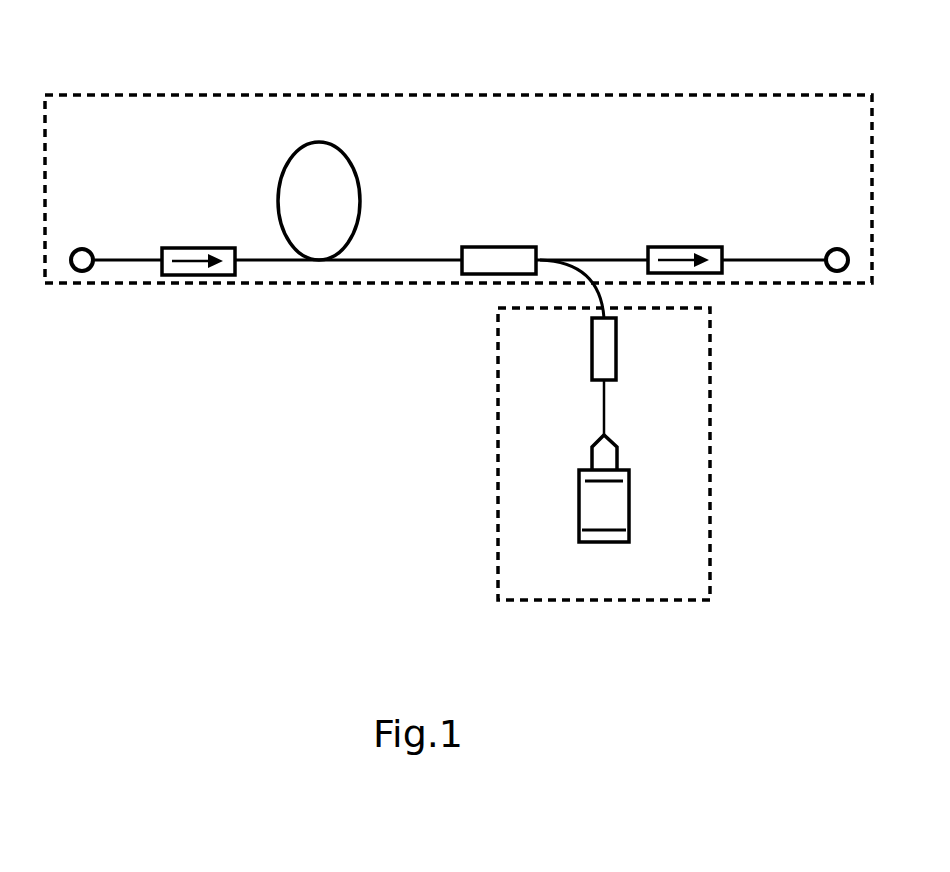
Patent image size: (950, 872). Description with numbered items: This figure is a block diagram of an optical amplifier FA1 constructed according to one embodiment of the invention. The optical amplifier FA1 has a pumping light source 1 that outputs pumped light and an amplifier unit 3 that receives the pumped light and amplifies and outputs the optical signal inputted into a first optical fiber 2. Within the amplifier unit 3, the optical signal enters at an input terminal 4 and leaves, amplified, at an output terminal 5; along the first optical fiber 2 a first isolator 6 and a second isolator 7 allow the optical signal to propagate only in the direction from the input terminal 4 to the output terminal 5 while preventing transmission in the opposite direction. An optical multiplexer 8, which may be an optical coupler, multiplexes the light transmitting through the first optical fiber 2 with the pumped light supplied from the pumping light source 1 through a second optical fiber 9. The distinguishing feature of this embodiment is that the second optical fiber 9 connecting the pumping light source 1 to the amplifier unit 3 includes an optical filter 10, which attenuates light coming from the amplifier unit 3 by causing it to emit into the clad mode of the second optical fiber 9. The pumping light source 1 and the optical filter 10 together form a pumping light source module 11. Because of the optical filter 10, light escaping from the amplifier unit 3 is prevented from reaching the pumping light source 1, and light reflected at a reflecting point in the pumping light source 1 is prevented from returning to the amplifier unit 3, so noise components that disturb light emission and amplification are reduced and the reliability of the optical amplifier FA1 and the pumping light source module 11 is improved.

The optical amplifier FA1 is at (238, 78).
The pumping light source 1 is at (630, 503).
The first optical fiber 2 is at (372, 258).
The amplifier unit 3 is at (534, 94).
The input terminal 4 is at (81, 246).
The output terminal 5 is at (836, 247).
The first isolator 6 is at (177, 247).
The second isolator 7 is at (665, 247).
The optical multiplexer 8 is at (488, 247).
The second optical fiber 9 is at (602, 402).
The optical filter 10 is at (617, 345).
The pumping light source module 11 is at (497, 448).